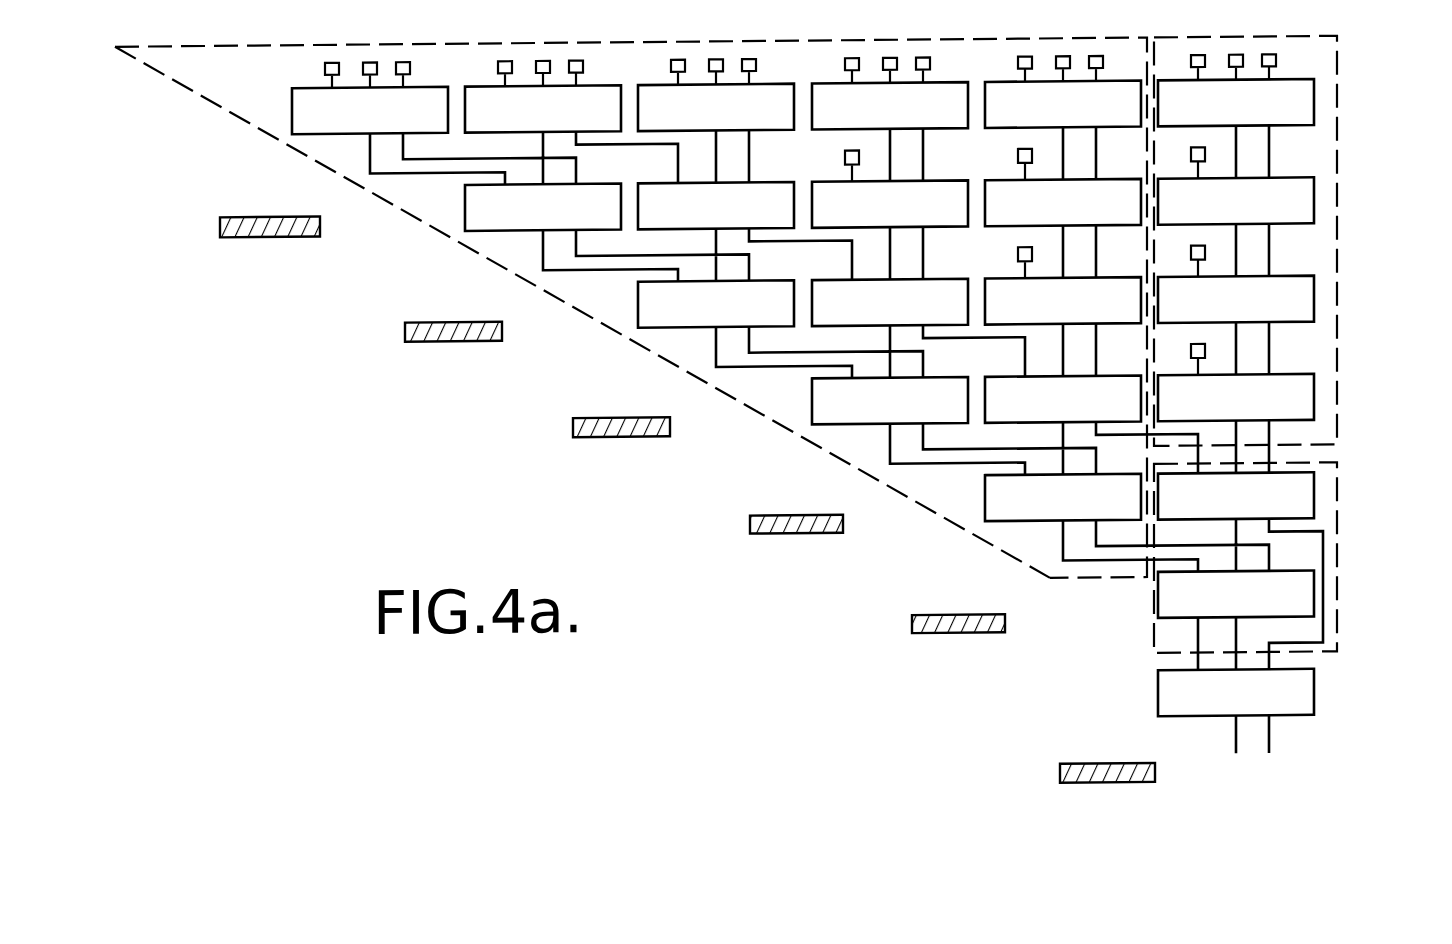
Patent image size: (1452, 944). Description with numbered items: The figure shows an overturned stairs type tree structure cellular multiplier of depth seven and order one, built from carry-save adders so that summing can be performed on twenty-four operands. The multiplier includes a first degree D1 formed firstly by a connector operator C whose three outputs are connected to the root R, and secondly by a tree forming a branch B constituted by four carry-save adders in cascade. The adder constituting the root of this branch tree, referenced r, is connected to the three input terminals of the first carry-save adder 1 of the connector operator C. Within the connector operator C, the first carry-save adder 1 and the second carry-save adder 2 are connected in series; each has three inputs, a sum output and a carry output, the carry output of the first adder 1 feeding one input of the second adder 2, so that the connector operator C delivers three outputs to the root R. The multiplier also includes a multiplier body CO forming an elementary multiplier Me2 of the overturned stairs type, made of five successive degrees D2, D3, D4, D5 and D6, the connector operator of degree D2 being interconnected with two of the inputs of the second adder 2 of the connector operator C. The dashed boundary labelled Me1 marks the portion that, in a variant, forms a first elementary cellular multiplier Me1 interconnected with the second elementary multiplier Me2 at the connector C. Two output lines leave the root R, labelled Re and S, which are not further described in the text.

The first elementary cellular multiplier Me1 is at (1330, 136).
The elementary multiplier Me2 is at (755, 406).
The branch B is at (1314, 206).
The root adder r is at (1314, 396).
The first carry-save adder 1 is at (1302, 496).
The connector operator C is at (1323, 509).
The second carry-save adder 2 is at (1300, 603).
The root R is at (1314, 700).
The result output Re is at (1234, 758).
The sign output S is at (1272, 758).
The multiplier body CO is at (958, 502).
The first degree D1 is at (1107, 751).
The degree D2 is at (958, 605).
The degree D3 is at (796, 502).
The degree D4 is at (621, 404).
The degree D5 is at (453, 312).
The degree D6 is at (270, 204).